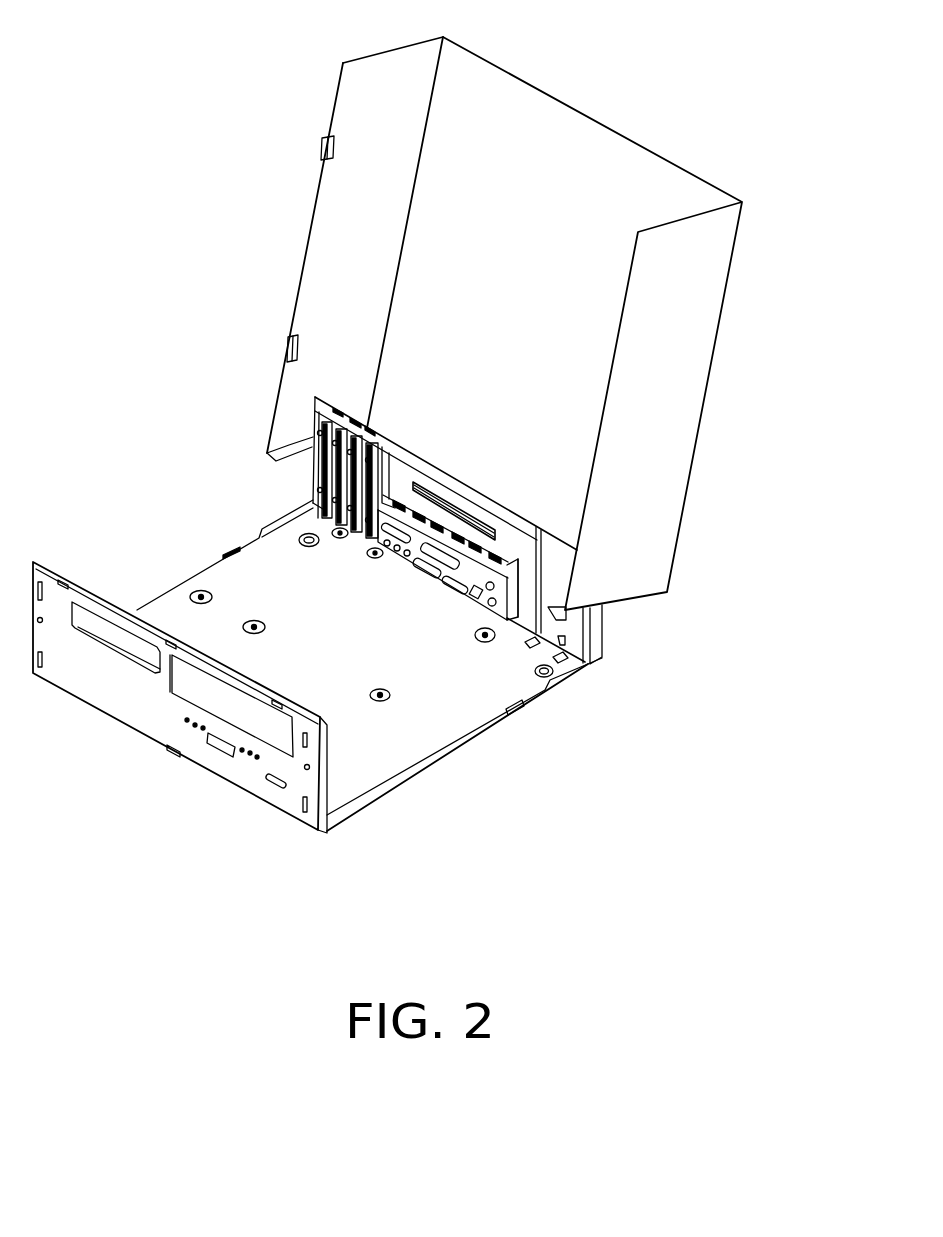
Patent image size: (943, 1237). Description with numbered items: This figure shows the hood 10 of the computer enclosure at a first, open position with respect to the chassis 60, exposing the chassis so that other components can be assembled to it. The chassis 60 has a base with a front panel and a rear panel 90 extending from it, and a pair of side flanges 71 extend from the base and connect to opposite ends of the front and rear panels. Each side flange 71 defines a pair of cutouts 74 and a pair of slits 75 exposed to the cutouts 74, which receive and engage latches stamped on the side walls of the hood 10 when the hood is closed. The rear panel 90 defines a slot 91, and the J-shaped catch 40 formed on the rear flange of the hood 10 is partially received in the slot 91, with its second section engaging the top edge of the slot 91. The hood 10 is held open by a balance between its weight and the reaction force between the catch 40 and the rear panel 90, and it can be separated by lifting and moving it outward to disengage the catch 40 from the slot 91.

The hood 10 is at (533, 82).
The catch 40 is at (450, 503).
The chassis 60 is at (288, 511).
The side flange 71 is at (478, 733).
The cutout 74 is at (543, 700).
The slit 75 is at (518, 716).
The rear panel 90 is at (520, 537).
The slot 91 is at (417, 483).